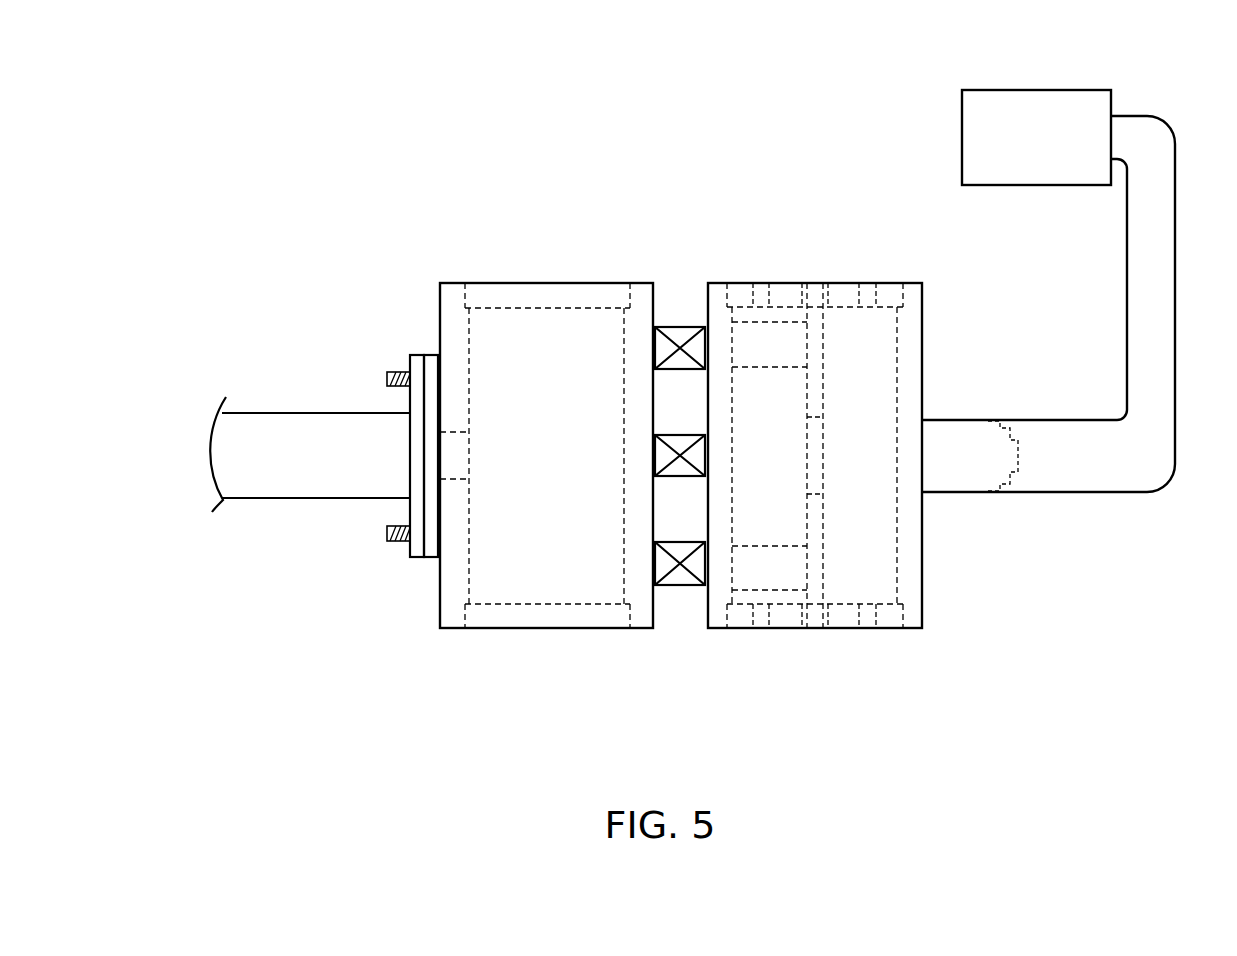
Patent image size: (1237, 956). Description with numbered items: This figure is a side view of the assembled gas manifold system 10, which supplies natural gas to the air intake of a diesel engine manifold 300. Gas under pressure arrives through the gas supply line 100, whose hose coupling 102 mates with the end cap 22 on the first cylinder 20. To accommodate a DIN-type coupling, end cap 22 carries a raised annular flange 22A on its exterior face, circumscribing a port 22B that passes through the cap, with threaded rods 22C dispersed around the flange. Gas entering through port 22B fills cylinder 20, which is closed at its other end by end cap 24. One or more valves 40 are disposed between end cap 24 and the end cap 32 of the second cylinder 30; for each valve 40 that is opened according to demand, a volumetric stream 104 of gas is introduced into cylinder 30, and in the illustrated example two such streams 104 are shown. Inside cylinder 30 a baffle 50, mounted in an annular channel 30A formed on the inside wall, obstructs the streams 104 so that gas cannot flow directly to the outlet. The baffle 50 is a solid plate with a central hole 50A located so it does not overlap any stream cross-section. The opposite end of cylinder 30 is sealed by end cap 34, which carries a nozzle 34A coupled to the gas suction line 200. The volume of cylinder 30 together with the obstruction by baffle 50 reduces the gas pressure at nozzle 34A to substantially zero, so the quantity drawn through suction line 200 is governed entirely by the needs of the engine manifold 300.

The gas manifold system 10 is at (706, 128).
The cylinder 20 is at (551, 283).
The end cap 22 is at (456, 628).
The annular flange 22A is at (429, 557).
The port 22B is at (455, 458).
The threaded rods 22C is at (393, 372).
The end cap 24 is at (638, 628).
The cylinder 30 is at (783, 283).
The annular channel 30A is at (760, 283).
The end cap 32 is at (722, 630).
The end cap 34 is at (910, 630).
The nozzle 34A is at (1020, 456).
The valves 40 is at (668, 435).
The baffle 50 is at (815, 578).
The hole 50A is at (818, 456).
The gas supply line 100 is at (247, 411).
The hose coupling 102 is at (414, 353).
The stream 104 is at (765, 370).
The gas suction line 200 is at (1147, 493).
The engine manifold 300 is at (1036, 90).